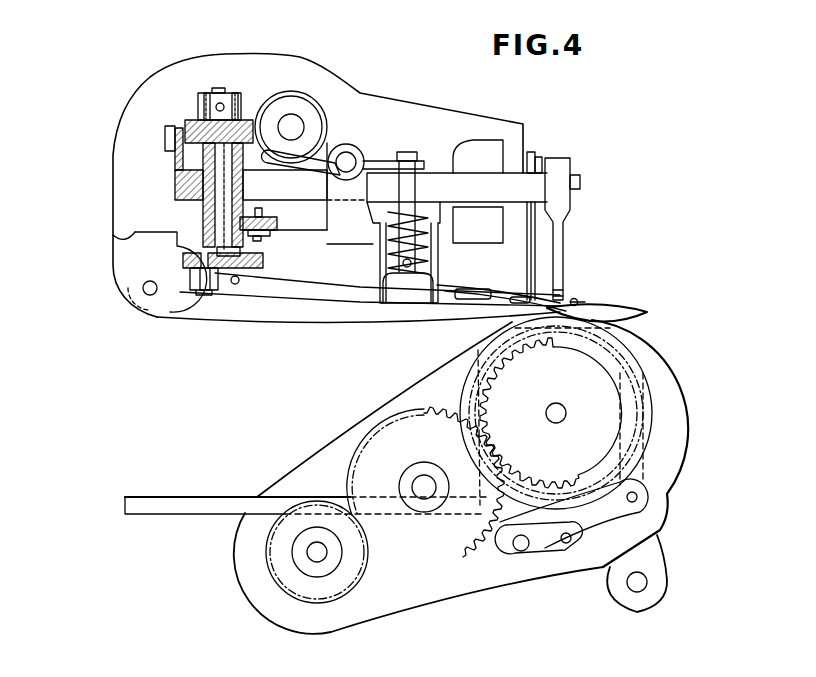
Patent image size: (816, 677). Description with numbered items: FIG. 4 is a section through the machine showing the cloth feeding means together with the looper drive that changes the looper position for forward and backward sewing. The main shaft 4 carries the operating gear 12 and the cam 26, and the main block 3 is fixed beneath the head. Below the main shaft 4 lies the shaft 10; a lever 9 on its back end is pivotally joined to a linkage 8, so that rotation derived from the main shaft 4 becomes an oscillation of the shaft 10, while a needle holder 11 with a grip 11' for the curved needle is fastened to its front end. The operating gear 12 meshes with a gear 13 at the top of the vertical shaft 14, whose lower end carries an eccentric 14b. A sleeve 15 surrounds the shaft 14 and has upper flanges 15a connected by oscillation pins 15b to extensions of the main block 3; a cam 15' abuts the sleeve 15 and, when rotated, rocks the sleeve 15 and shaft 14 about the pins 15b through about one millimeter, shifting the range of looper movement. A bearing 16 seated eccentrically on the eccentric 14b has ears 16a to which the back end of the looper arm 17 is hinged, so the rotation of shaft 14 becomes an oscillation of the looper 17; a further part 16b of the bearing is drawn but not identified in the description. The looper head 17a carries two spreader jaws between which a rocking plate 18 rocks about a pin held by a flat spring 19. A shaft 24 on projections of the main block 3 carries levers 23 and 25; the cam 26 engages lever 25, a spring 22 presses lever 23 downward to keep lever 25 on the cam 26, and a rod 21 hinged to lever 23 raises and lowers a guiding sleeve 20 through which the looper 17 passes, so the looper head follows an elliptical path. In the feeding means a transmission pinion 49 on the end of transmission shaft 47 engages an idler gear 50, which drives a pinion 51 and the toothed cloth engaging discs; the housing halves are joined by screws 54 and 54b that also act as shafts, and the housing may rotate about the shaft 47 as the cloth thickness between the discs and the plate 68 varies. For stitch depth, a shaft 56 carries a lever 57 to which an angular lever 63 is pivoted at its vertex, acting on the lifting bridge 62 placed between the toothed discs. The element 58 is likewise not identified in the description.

The main block 3 is at (138, 238).
The main shaft 4 is at (294, 128).
The linkage 8 is at (170, 135).
The lever 9 is at (178, 126).
The shaft 10 is at (440, 180).
The needle holder 11 is at (569, 215).
The grip 11' is at (577, 277).
The operating gear 12 is at (320, 100).
The gear 13 is at (246, 122).
The vertical shaft 14 is at (220, 88).
The eccentric 14b is at (264, 262).
The sleeve 15 is at (168, 185).
The cam 15' is at (265, 203).
The upper flanges 15a is at (208, 93).
The oscillation pins 15b is at (235, 93).
The bearing 16 is at (206, 292).
The ears 16a is at (228, 296).
The clamp pin 16b is at (236, 284).
The looper arm 17 is at (300, 300).
The looper head 17a is at (500, 299).
The rocking plate 18 is at (580, 302).
The flat spring 19 is at (470, 289).
The sleeve 20 is at (410, 302).
The rod 21 is at (412, 152).
The spring 22 is at (396, 252).
The lever 23 is at (392, 160).
The shaft 24 is at (360, 160).
The lever 25 is at (348, 162).
The cam 26 is at (295, 104).
The transmission shaft 47 is at (322, 553).
The transmission pinion 49 is at (332, 584).
The second transmission idler gear 50 is at (364, 473).
The pinion 51 is at (572, 446).
The screw 54 is at (556, 404).
The screw 54b is at (424, 476).
The shaft 56 is at (514, 547).
The lever 57 is at (540, 552).
The plate 58 is at (220, 504).
The lifting bridge 62 is at (630, 366).
The angular lever 63 is at (648, 522).
The plate 68 is at (330, 314).